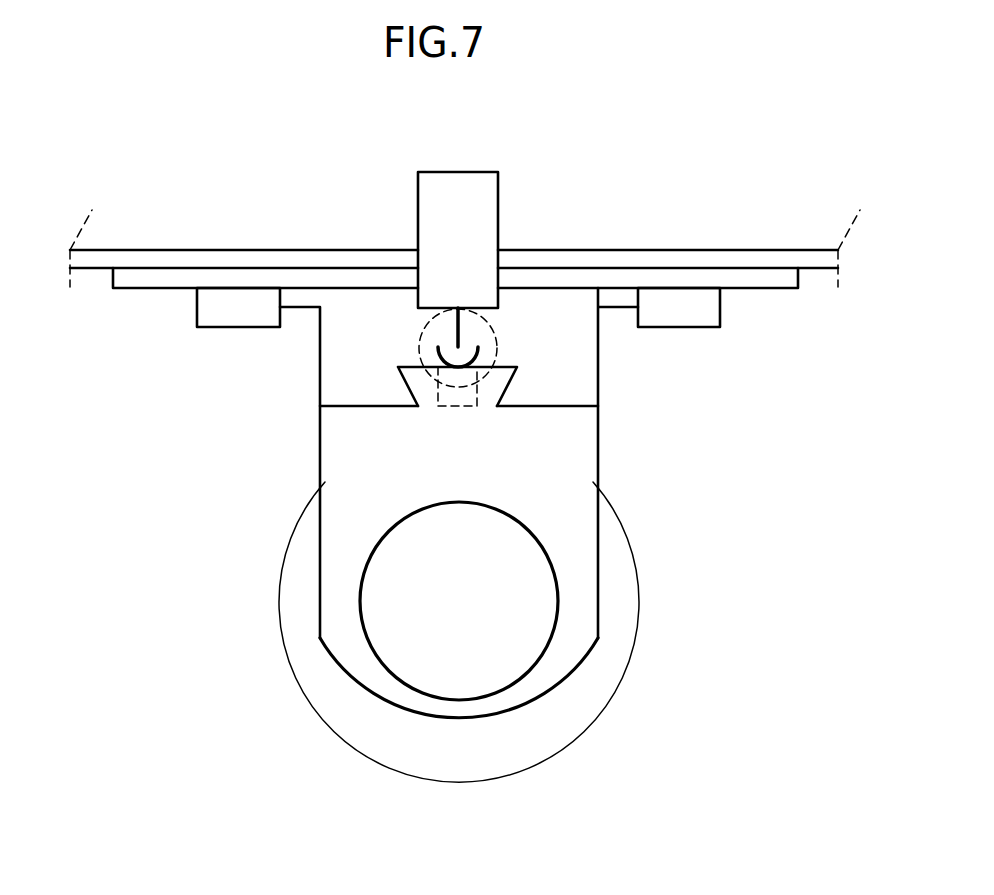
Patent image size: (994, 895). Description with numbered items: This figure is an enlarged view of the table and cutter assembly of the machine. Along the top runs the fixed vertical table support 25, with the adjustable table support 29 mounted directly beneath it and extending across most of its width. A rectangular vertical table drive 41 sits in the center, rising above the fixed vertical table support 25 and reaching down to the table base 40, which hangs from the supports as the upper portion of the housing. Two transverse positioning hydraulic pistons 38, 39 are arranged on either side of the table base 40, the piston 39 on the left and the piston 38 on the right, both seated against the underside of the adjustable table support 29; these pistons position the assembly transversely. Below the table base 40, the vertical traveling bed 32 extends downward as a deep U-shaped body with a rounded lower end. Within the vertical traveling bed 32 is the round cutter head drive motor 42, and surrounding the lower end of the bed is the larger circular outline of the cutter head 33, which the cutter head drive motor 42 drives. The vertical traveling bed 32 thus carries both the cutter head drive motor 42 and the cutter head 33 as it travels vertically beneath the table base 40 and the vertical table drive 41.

The fixed vertical table support 25 is at (620, 250).
The adjustable table support 29 is at (798, 288).
The vertical traveling bed 32 is at (320, 443).
The cutter head 33 is at (638, 543).
The transverse positioning hydraulic piston 38 is at (658, 327).
The transverse positioning hydraulic piston 39 is at (197, 327).
The table base 40 is at (320, 367).
The vertical table drive 41 is at (498, 172).
The cutter head drive motor 42 is at (438, 503).